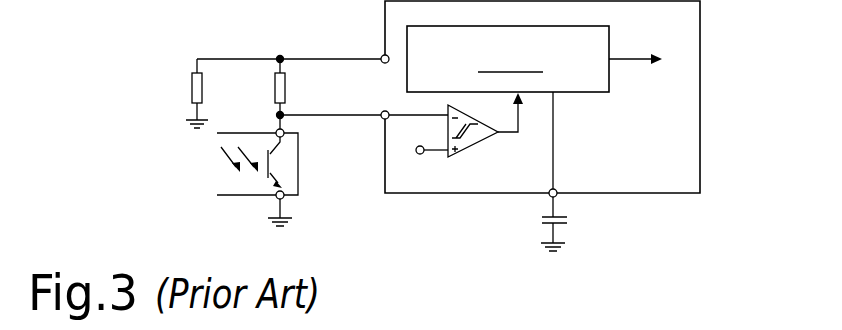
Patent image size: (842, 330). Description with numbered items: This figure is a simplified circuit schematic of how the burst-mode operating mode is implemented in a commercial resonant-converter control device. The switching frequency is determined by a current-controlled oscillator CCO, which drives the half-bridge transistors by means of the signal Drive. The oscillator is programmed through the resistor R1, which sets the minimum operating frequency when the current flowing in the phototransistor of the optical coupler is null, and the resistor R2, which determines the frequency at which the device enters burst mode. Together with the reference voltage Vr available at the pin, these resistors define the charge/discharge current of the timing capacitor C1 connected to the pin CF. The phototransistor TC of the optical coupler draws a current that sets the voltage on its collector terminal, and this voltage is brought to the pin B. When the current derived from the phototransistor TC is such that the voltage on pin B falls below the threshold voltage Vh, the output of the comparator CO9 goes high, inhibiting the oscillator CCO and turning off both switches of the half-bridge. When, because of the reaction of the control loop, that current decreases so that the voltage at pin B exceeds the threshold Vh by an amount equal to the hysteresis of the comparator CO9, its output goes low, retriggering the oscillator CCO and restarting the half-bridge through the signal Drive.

The resistor R1 is at (182, 93).
The resistor R2 is at (260, 87).
The phototransistor TC is at (282, 170).
The reference voltage Vr is at (293, 44).
The pin B is at (363, 102).
The current-controlled oscillator CCO is at (508, 59).
The drive signal Drive is at (645, 75).
The comparator CO9 is at (490, 134).
The threshold voltage Vh is at (419, 167).
The pin CF is at (572, 144).
The timing capacitor C1 is at (574, 224).